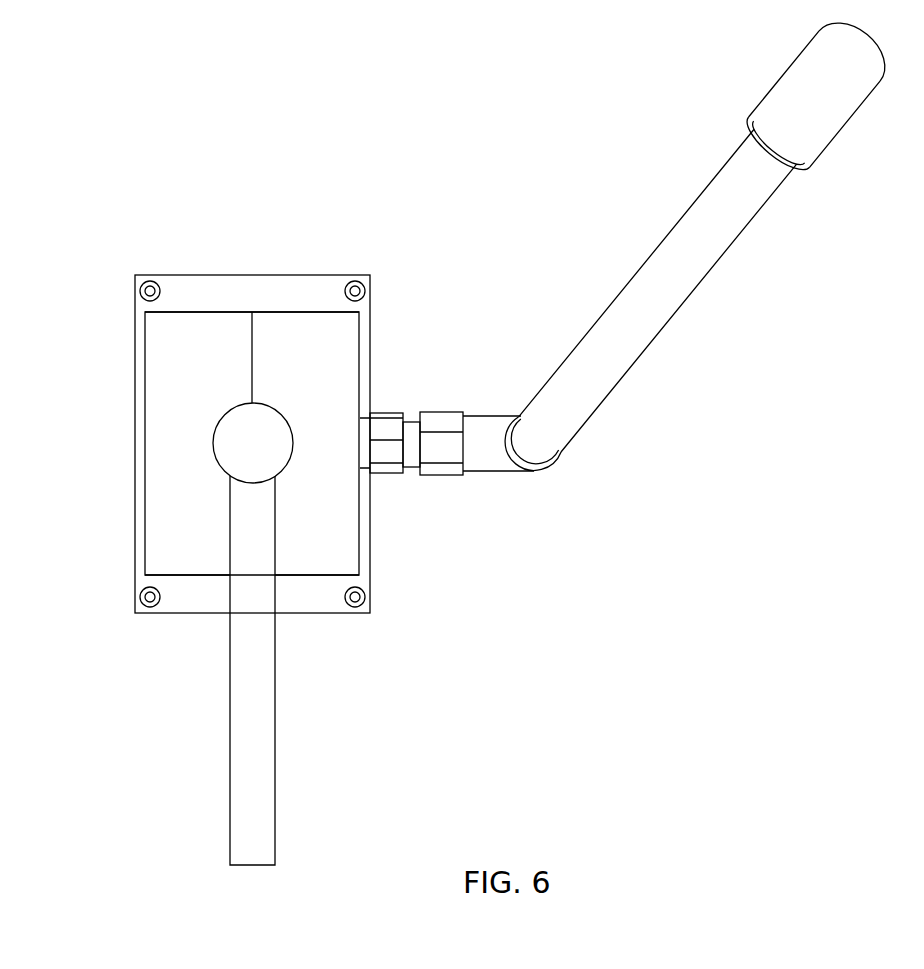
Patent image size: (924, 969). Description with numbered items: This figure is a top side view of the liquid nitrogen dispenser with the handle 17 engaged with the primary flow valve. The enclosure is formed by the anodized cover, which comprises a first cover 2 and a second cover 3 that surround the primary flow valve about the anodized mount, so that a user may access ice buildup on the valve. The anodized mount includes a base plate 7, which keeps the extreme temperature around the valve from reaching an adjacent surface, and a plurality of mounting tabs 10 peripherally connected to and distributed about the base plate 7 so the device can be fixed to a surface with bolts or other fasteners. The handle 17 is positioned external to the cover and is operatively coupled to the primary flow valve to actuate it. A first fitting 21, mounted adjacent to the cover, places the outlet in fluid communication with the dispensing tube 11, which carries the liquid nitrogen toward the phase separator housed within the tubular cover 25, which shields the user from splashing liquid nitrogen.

The first cover 2 is at (160, 373).
The second cover 3 is at (348, 373).
The base plate 7 is at (232, 285).
The plurality of mounting tabs 10 is at (140, 293).
The dispensing tube 11 is at (650, 278).
The handle 17 is at (263, 737).
The first fitting 21 is at (408, 460).
The tubular cover 25 is at (838, 100).